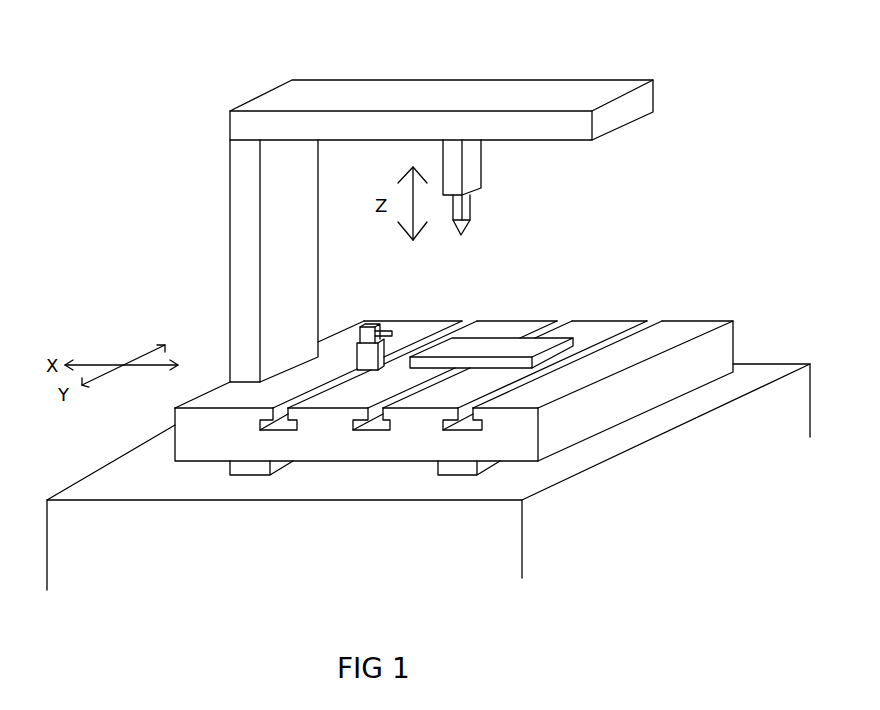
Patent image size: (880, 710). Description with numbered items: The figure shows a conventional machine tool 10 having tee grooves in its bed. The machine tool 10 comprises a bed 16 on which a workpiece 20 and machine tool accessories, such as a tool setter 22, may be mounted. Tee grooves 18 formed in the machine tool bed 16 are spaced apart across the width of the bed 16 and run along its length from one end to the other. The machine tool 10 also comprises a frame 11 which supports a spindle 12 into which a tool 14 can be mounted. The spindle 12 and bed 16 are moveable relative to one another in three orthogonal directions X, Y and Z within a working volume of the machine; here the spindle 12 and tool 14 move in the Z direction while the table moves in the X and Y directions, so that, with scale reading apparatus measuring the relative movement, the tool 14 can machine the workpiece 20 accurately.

The machine tool 10 is at (680, 117).
The frame 11 is at (280, 100).
The spindle 12 is at (488, 179).
The tool 14 is at (467, 231).
The bed 16 is at (683, 335).
The tee grooves 18 is at (463, 425).
The workpiece 20 is at (493, 348).
The tool setter 22 is at (367, 357).